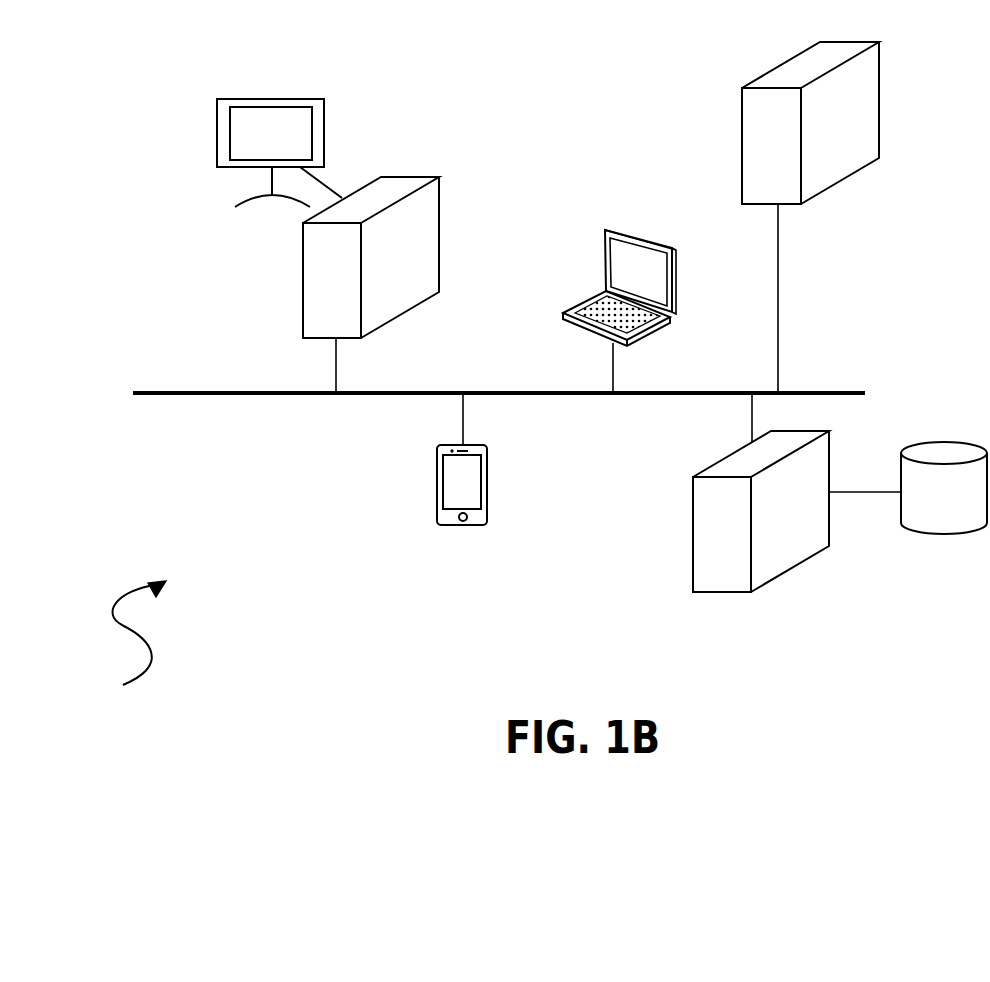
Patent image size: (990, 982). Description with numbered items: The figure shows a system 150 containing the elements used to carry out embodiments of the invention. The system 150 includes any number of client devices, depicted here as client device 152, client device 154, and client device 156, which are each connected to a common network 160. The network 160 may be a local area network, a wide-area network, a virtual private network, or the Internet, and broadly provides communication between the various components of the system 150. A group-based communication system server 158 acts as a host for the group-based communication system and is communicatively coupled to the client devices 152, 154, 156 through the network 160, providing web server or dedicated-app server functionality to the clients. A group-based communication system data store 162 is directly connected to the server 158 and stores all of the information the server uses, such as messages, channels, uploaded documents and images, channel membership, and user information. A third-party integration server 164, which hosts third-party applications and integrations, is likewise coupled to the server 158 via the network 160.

The system 150 is at (125, 642).
The client device 152 is at (303, 278).
The client device 154 is at (606, 272).
The client device 156 is at (487, 480).
The group-based communication system server 158 is at (693, 544).
The network 160 is at (172, 394).
The group-based communication system data store 162 is at (933, 533).
The third-party integration server 164 is at (742, 143).